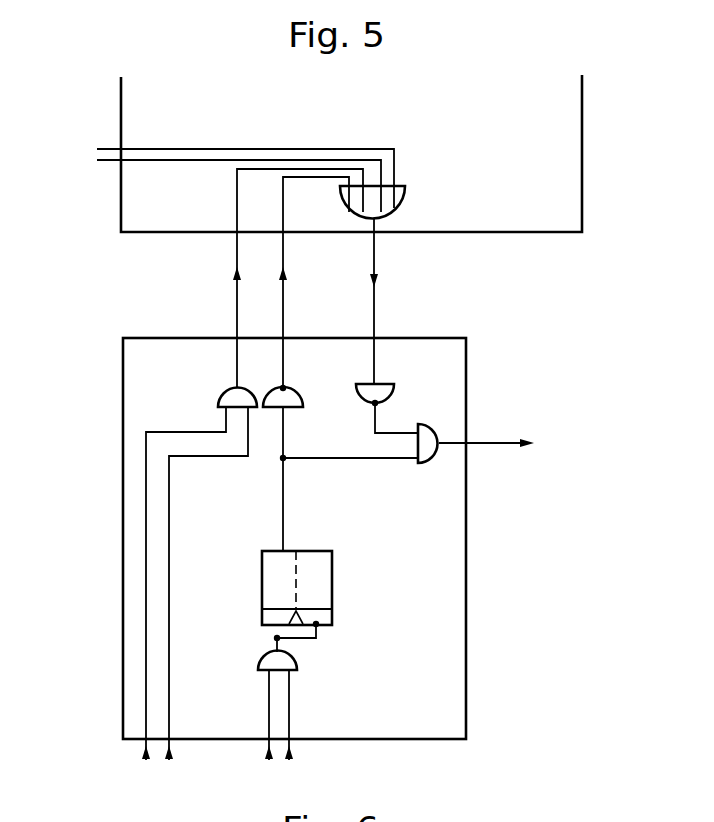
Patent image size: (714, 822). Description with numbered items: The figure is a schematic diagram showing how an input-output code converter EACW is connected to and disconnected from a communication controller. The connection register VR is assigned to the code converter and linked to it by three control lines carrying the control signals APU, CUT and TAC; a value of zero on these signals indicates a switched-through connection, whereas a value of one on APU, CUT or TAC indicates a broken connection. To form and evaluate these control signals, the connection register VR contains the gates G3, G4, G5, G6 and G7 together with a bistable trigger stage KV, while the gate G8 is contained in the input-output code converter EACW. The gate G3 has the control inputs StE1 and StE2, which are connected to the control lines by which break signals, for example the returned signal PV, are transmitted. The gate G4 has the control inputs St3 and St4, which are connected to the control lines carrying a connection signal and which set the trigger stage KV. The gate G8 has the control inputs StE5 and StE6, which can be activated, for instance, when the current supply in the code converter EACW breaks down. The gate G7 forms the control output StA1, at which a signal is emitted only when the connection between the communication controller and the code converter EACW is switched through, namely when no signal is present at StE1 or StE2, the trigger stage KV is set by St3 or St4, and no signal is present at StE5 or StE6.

The input-output code converter EACW is at (351, 153).
The control input StE5 is at (216, 168).
The control input StE6 is at (209, 182).
The gate G8 is at (389, 199).
The control signal APU is at (276, 278).
The control signal CUT is at (348, 364).
The control signal TAC is at (395, 301).
The connection register VR is at (294, 538).
The gate G3 is at (224, 400).
The gate G4 is at (262, 662).
The gate G5 is at (296, 400).
The gate G6 is at (390, 406).
The gate G7 is at (429, 460).
The control output StA1 is at (512, 443).
The bistable trigger stage KV is at (314, 601).
The control input StE1 is at (175, 600).
The control input StE2 is at (206, 600).
The control input St3 is at (269, 731).
The control input St4 is at (304, 731).
The returned signal PV is at (150, 809).